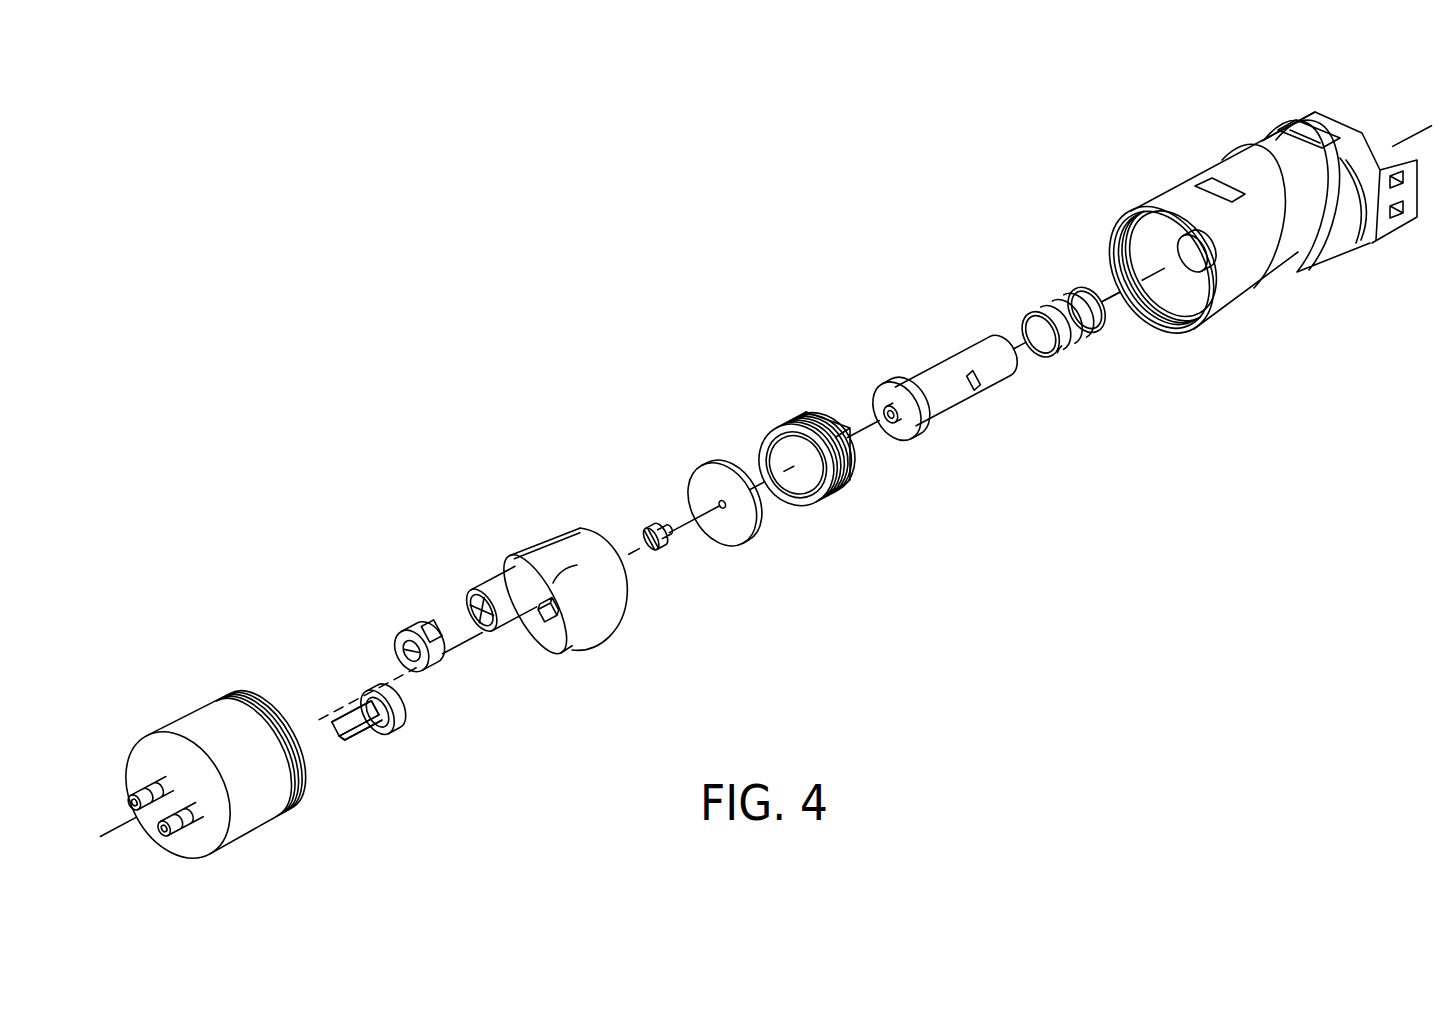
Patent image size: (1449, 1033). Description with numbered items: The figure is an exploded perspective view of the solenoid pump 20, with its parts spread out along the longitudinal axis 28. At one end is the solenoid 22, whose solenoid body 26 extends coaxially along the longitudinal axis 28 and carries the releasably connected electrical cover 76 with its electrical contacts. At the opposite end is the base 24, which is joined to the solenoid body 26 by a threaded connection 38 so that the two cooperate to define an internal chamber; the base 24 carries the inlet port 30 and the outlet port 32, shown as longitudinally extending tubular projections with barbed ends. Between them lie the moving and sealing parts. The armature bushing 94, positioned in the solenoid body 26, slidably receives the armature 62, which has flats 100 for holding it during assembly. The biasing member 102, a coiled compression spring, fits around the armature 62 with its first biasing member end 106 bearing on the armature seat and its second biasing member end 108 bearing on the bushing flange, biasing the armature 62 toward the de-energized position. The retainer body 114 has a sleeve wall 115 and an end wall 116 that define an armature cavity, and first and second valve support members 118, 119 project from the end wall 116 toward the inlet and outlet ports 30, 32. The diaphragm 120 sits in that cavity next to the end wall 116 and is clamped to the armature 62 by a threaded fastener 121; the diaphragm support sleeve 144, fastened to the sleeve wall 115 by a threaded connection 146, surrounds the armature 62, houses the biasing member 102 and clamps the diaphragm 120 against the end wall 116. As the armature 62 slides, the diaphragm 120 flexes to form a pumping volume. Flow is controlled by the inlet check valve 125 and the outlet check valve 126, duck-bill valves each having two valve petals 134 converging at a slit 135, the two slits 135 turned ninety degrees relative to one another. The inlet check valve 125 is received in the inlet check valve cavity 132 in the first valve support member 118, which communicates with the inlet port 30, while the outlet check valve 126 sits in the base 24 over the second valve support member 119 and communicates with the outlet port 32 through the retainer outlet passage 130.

The solenoid pump 20 is at (495, 212).
The solenoid 22 is at (822, 294).
The base 24 is at (158, 672).
The solenoid body 26 is at (1298, 235).
The longitudinal axis 28 is at (1418, 140).
The inlet port 30 is at (152, 784).
The outlet port 32 is at (200, 813).
The threaded connection 38 is at (273, 700).
The armature 62 is at (920, 333).
The electrical cover 76 is at (1400, 196).
The armature bushing 94 is at (1177, 263).
The flats 100 is at (978, 395).
The biasing member 102 is at (1035, 262).
The first biasing member end 106 is at (1032, 358).
The second biasing member end 108 is at (1100, 318).
The retainer body 114 is at (505, 492).
The sleeve wall 115 is at (610, 572).
The end wall 116 is at (610, 600).
The first valve support member 118 is at (507, 587).
The second valve support member 119 is at (553, 583).
The diaphragm 120 is at (688, 440).
The threaded fastener 121 is at (628, 500).
The inlet check valve 125 is at (476, 697).
The outlet check valve 126 is at (430, 740).
The retainer outlet passage 130 is at (540, 625).
The inlet check valve cavity 132 is at (490, 600).
The valve petals 134 is at (350, 712).
The slit 135 is at (337, 745).
The diaphragm support sleeve 144 is at (778, 392).
The threaded connection 146 is at (838, 480).